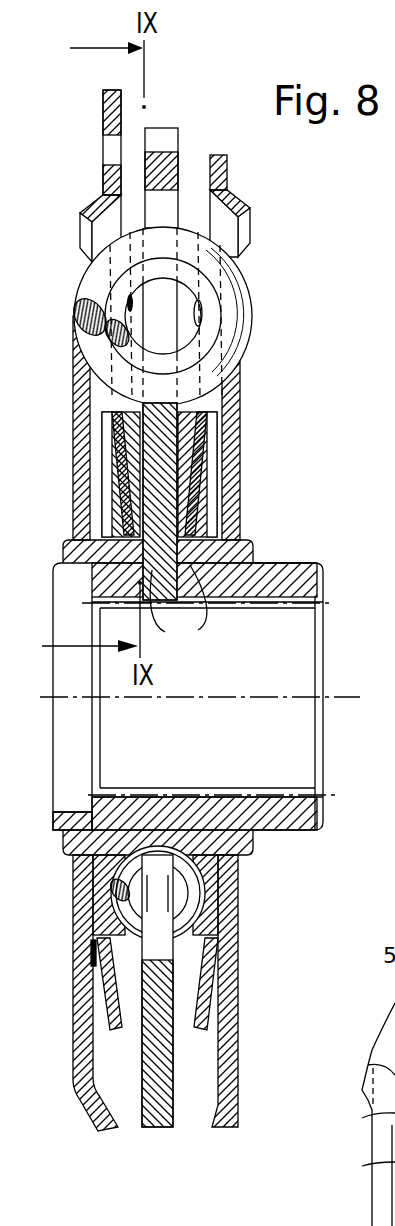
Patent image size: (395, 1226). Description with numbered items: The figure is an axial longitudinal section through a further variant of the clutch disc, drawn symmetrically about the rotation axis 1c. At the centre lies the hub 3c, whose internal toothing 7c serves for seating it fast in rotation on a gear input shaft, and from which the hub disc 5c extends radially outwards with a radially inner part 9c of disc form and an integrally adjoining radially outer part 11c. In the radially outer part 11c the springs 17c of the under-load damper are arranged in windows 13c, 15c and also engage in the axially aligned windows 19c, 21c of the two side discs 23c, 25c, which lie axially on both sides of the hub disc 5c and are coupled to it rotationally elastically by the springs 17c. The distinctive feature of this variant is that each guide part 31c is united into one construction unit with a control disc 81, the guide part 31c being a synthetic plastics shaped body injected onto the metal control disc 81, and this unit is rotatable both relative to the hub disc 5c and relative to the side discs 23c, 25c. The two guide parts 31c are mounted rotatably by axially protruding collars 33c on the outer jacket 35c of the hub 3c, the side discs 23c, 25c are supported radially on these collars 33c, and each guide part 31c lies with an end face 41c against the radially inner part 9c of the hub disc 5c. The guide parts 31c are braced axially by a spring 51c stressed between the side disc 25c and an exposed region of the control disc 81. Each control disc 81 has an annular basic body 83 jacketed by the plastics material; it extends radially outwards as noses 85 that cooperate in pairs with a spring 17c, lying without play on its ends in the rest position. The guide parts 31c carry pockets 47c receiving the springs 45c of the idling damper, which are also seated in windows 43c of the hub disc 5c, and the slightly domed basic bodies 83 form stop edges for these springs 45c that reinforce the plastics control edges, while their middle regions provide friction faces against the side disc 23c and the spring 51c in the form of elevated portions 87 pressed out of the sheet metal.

In FIG. 8, the rotation axis 1c is at (338, 700).
In FIG. 8, the hub 3c is at (318, 581).
In FIG. 8, the hub disc 5c is at (173, 167).
In FIG. 8, the internal toothing 7c is at (302, 614).
In FIG. 8, the radially inner part of the hub disc 9c is at (160, 470).
In FIG. 8, the radially outer part of the hub disc 11c is at (178, 1084).
In FIG. 8, the window 13c is at (167, 211).
In FIG. 9, the window 15c is at (394, 998).
In FIG. 8, the spring of the under-load damper 17c is at (110, 282).
In FIG. 9, the spring of the under-load damper 17c is at (365, 1165).
In FIG. 8, the window of side disc 19c is at (242, 230).
In FIG. 9, the window of side disc 19c is at (365, 1117).
In FIG. 8, the window of side disc 21c is at (100, 224).
In FIG. 8, the side disc 23c is at (240, 377).
In FIG. 8, the side disc 25c is at (92, 368).
In FIG. 8, the guide part 31c is at (108, 418).
In FIG. 8, the collar 33c is at (63, 545).
In FIG. 8, the outer jacket of the hub 35c is at (298, 562).
In FIG. 8, the end face 41c is at (178, 606).
In FIG. 8, the window of hub disc 43c is at (165, 948).
In FIG. 8, the spring of the idling damper 45c is at (112, 886).
In FIG. 8, the pocket 47c is at (103, 918).
In FIG. 8, the spring 51c is at (92, 956).
In FIG. 8, the control disc 81 is at (108, 1012).
In FIG. 8, the annular basic body 83 is at (112, 488).
In FIG. 8, the nose 85 is at (80, 317).
In FIG. 8, the elevated portion 87 is at (233, 394).